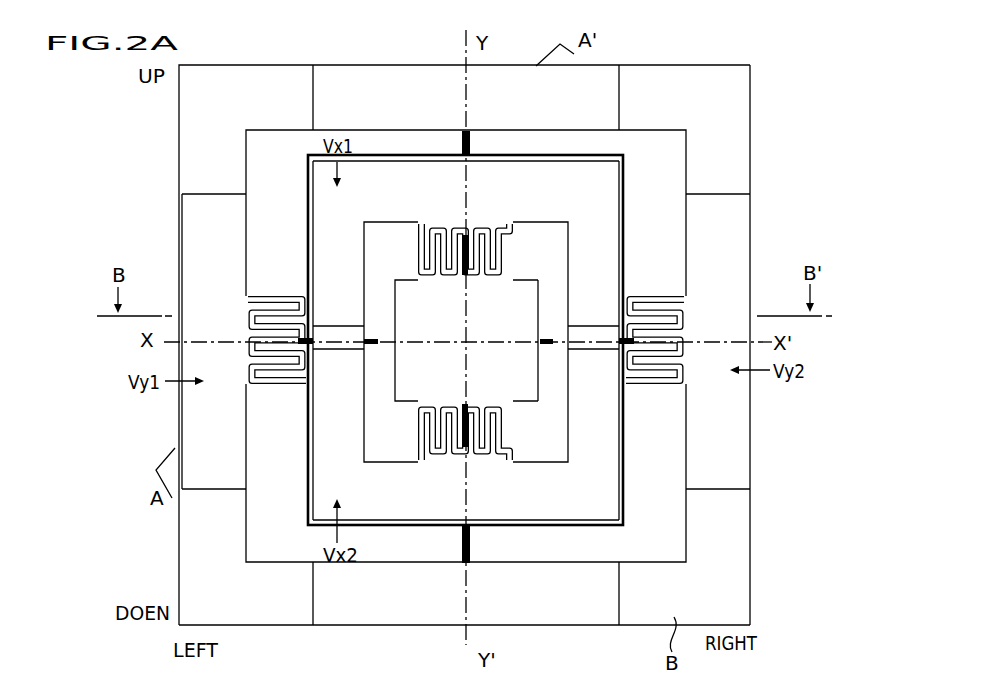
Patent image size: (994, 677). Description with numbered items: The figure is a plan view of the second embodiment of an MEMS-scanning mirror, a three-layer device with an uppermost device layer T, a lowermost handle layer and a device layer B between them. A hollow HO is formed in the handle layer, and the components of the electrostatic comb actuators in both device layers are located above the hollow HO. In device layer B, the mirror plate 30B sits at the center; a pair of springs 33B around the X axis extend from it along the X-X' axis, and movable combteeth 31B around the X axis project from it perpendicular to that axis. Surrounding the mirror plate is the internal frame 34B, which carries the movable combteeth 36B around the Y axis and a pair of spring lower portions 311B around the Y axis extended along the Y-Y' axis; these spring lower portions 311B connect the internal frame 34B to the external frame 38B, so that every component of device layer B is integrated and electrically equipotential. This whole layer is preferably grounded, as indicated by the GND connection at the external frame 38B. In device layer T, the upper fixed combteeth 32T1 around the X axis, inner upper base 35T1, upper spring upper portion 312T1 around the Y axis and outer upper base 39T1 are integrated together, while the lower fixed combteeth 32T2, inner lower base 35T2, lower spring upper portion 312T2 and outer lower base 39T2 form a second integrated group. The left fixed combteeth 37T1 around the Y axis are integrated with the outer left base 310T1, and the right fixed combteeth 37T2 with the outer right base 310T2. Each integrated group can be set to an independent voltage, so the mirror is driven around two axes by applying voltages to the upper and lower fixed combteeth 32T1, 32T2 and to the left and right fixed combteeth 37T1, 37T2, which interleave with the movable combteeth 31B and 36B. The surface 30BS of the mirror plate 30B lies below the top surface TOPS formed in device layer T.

The movable combteeth around the X axis 31B is at (463, 222).
The movable combteeth around the Y axis 36B is at (246, 340).
The external frame 38B is at (255, 606).
The device layer T is at (719, 255).
The ground electrode GND is at (694, 612).
The outer upper base 39T1 is at (592, 115).
The outer lower base 39T2 is at (592, 608).
The outer left base 310T1 is at (245, 470).
The outer right base 310T2 is at (748, 438).
The top surface TOPS is at (605, 193).
The inner upper base 35T1 is at (592, 196).
The inner lower base 35T2 is at (592, 510).
The internal frame 34B is at (340, 333).
The left fixed combteeth around the Y axis 37T1 is at (333, 352).
The right fixed combteeth around the Y axis 37T2 is at (605, 340).
The hollow HO is at (397, 248).
The mirror plate 30B is at (447, 370).
The surface of the mirror plate 30BS is at (510, 295).
The springs around the X axis 33B is at (378, 345).
The upper fixed combteeth around the X axis 32T1 is at (463, 282).
The lower fixed combteeth around the X axis 32T2 is at (465, 402).
The spring lower portions around the Y axis 311B is at (376, 351).
The upper spring upper portion around the Y axis 312T1 is at (462, 150).
The lower spring upper portion around the Y axis 312T2 is at (462, 548).